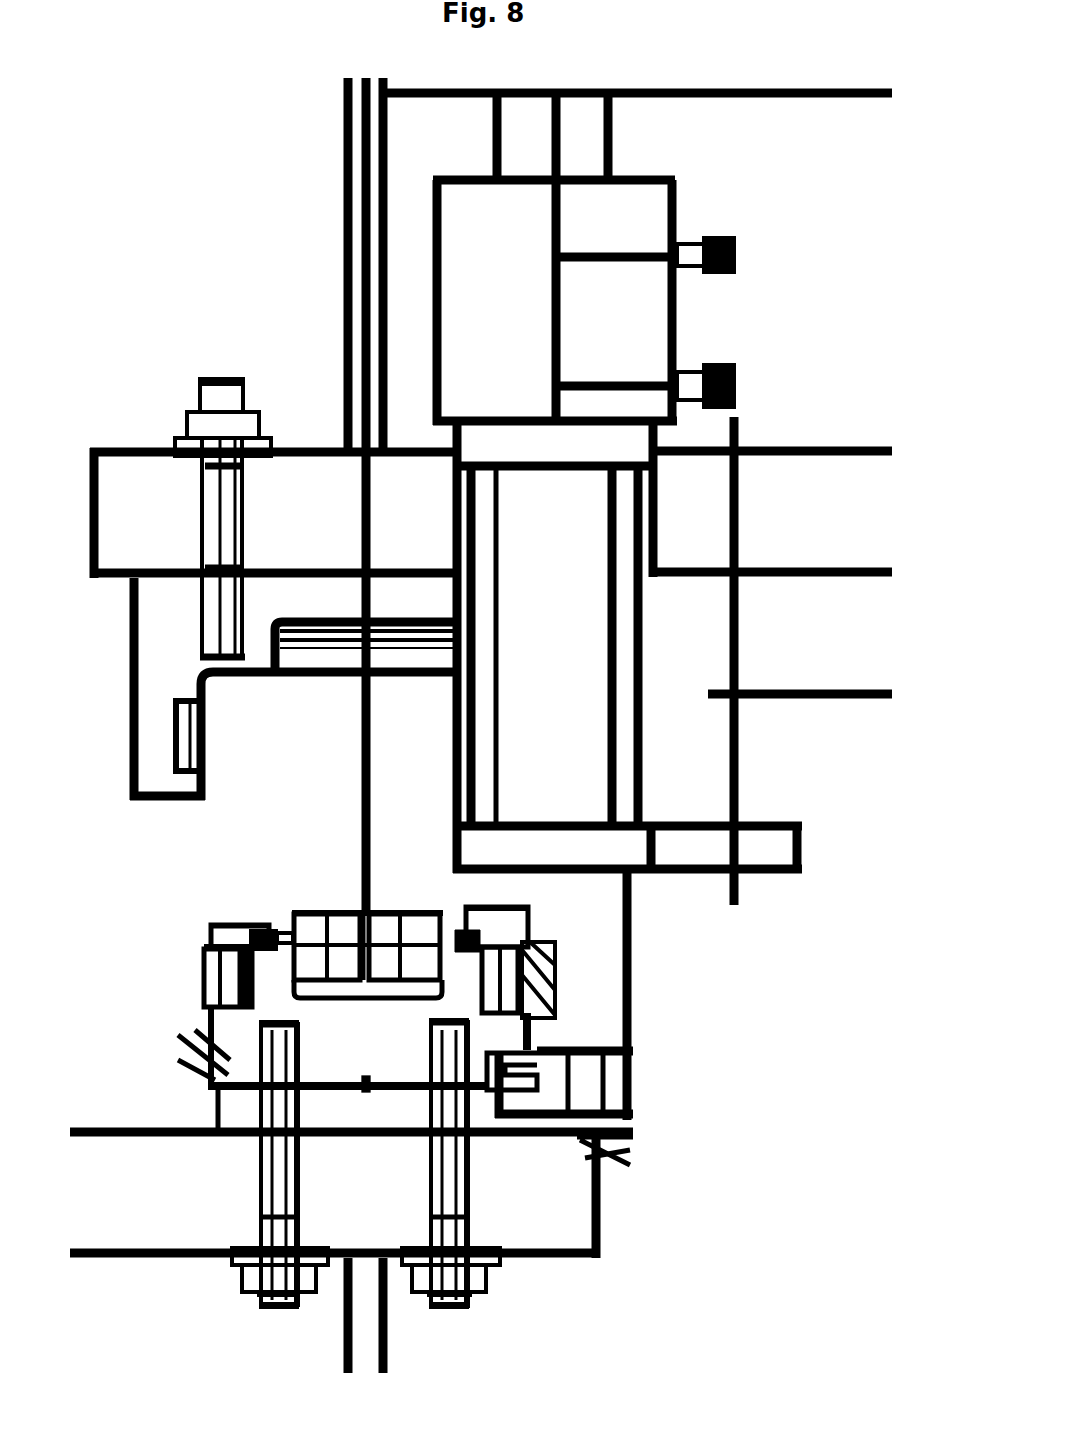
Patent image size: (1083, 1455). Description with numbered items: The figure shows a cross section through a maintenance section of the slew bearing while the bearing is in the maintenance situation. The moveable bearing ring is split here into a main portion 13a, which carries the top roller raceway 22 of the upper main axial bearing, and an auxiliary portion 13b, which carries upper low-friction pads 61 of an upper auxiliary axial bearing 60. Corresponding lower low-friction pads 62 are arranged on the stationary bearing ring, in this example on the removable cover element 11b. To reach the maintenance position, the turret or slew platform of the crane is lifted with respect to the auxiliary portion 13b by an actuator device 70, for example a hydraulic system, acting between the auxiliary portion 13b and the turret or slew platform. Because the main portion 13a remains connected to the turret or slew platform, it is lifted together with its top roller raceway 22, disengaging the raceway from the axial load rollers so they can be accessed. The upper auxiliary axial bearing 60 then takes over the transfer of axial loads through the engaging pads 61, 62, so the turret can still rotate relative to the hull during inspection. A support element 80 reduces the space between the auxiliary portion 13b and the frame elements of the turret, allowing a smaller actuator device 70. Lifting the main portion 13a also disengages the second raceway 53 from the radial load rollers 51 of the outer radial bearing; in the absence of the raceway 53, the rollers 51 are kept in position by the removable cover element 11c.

The actuator device 70 is at (645, 312).
The support element 80 is at (622, 662).
The top roller raceway 22 is at (332, 658).
The main portion 13a is at (152, 660).
The second raceway 53 is at (200, 750).
The upper auxiliary axial bearing 60 is at (500, 890).
The upper low-friction pads 61 is at (483, 918).
The cover element 11b is at (588, 946).
The lower low-friction pads 62 is at (588, 946).
The cover element 11c is at (227, 935).
The radial load rollers 51 is at (215, 970).
The auxiliary portion 13b is at (603, 1000).